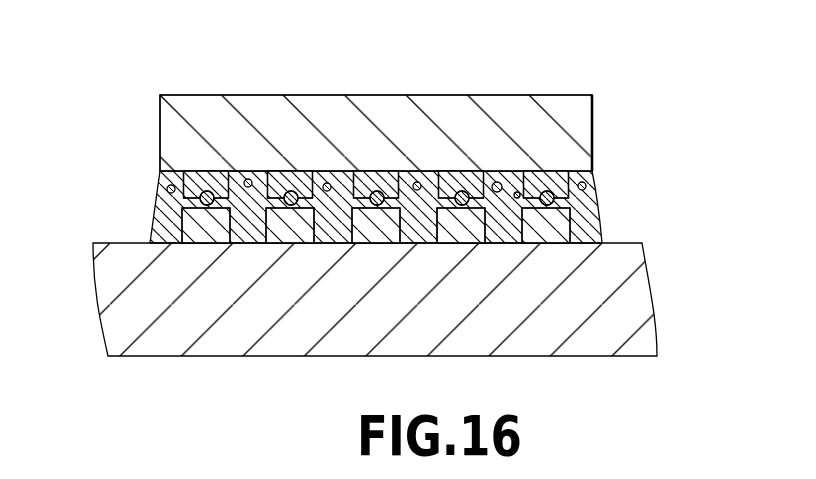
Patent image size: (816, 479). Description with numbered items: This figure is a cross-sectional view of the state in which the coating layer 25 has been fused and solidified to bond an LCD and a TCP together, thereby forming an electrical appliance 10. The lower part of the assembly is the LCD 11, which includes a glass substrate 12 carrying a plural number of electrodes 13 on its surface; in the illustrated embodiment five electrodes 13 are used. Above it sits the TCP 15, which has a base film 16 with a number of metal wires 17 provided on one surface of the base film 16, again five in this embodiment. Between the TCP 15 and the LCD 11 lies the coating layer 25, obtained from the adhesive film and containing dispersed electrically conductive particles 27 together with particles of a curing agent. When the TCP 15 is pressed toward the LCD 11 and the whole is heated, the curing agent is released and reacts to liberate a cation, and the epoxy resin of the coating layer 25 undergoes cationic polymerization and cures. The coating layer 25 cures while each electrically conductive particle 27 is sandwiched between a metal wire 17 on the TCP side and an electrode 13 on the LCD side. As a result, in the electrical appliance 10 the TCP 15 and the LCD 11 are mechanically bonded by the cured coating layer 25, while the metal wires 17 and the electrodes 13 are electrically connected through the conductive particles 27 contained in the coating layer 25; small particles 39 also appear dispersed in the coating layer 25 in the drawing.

The electrical appliance 10 is at (77, 112).
The LCD 11 is at (448, 214).
The glass substrate 12 is at (590, 318).
The electrodes 13 is at (562, 222).
The TCP 15 is at (476, 157).
The base film 16 is at (573, 116).
The metal wires 17 is at (592, 172).
The coating layer 25 is at (587, 203).
The electrically conductive particles 27 is at (211, 195).
The filler particles 39 is at (163, 188).